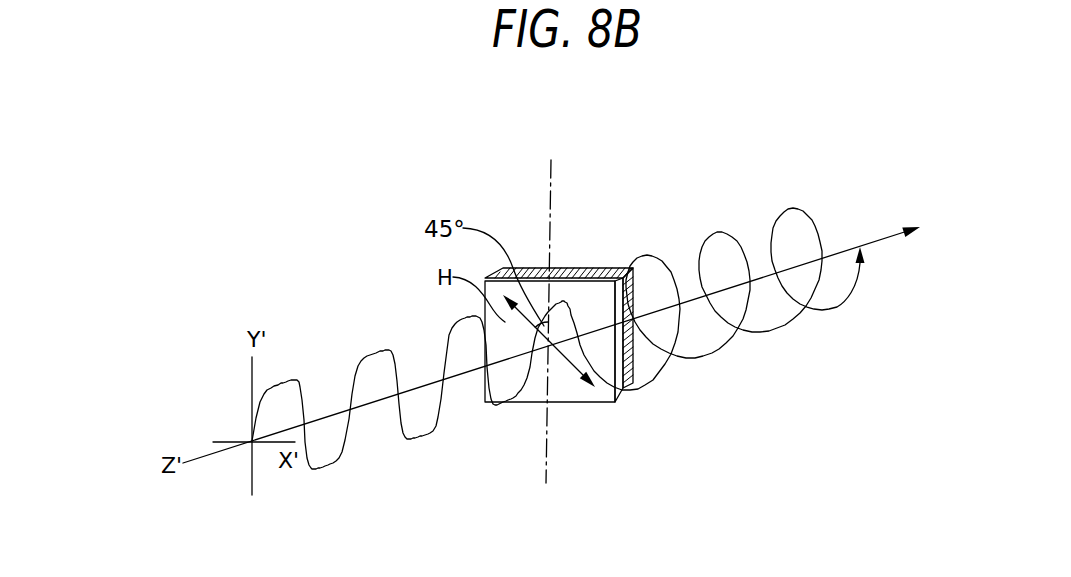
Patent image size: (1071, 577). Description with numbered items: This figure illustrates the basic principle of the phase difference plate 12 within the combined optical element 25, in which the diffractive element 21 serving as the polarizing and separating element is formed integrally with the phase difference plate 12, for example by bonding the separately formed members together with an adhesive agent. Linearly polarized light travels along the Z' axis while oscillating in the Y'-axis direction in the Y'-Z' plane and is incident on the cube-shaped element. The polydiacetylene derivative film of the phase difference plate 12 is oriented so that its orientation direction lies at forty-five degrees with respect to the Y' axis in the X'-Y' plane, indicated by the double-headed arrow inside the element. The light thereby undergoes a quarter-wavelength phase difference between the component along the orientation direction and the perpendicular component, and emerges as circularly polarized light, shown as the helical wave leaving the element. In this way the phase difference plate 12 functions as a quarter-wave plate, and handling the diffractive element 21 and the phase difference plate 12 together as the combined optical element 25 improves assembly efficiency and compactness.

The phase difference plate 12 is at (615, 238).
The diffractive element 21 is at (629, 388).
The combined optical element 25 is at (624, 322).